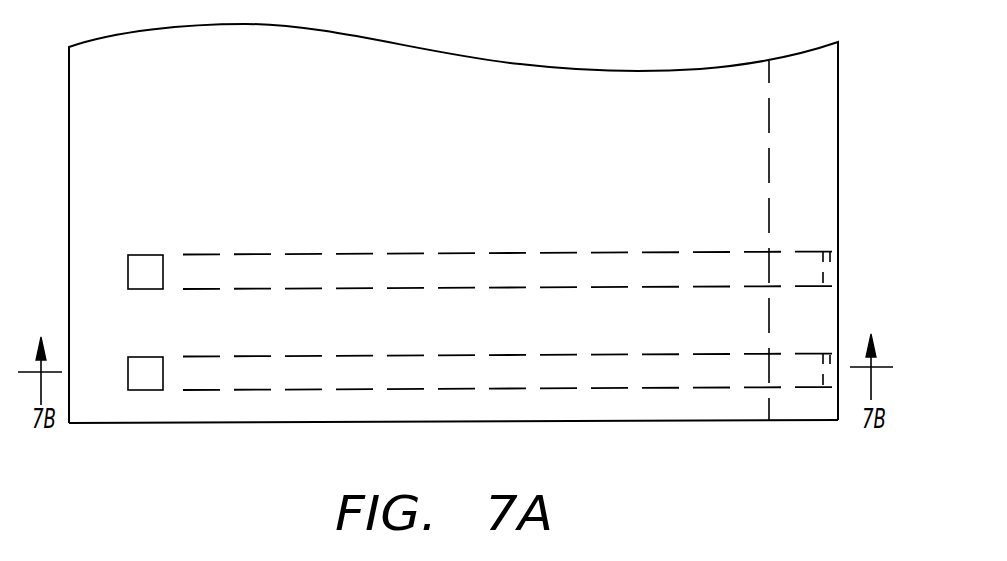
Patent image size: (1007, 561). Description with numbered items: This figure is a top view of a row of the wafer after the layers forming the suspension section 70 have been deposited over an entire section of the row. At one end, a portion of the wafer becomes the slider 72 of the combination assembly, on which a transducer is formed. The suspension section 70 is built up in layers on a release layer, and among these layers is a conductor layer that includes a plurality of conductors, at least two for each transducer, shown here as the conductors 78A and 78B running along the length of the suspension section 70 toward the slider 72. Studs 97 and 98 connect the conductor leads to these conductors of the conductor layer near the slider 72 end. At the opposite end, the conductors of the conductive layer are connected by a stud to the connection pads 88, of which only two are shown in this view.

The suspension section 70 is at (92, 181).
The slider 72 is at (801, 405).
The conductor 78A is at (243, 366).
The conductor 78B is at (257, 268).
The connection pads 88 is at (137, 273).
The stud 97 is at (838, 242).
The stud 98 is at (840, 325).